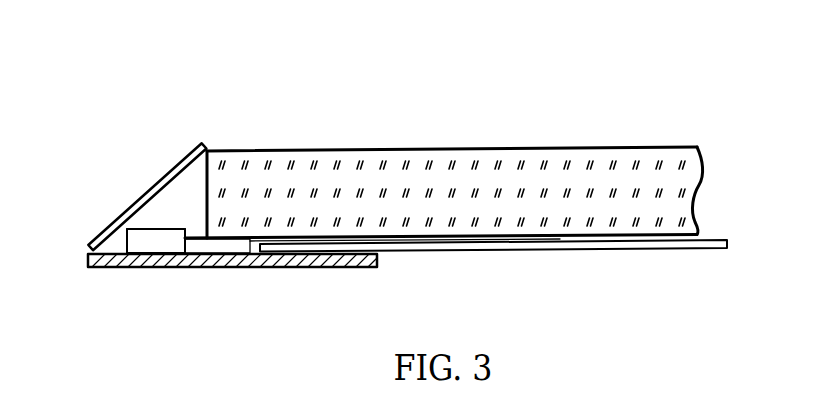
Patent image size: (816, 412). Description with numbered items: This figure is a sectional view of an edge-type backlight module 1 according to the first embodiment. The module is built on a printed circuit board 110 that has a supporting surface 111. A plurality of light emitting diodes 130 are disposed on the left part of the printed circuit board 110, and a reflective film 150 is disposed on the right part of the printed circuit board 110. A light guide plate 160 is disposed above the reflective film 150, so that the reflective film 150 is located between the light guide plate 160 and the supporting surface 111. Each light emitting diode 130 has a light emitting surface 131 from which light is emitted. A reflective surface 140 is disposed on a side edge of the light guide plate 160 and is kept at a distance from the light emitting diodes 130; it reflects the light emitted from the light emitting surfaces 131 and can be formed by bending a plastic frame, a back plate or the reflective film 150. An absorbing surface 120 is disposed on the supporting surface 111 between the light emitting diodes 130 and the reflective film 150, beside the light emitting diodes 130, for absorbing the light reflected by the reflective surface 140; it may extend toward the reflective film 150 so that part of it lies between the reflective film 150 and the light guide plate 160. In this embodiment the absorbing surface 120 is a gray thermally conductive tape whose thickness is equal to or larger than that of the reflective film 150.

The edge-type backlight module 1 is at (147, 100).
The printed circuit board 110 is at (322, 267).
The supporting surface 111 is at (302, 256).
The absorbing surface 120 is at (235, 243).
The light emitting diode 130 is at (158, 240).
The light emitting surface 131 is at (143, 231).
The reflective surface 140 is at (110, 223).
The reflective film 150 is at (563, 246).
The light guide plate 160 is at (675, 192).